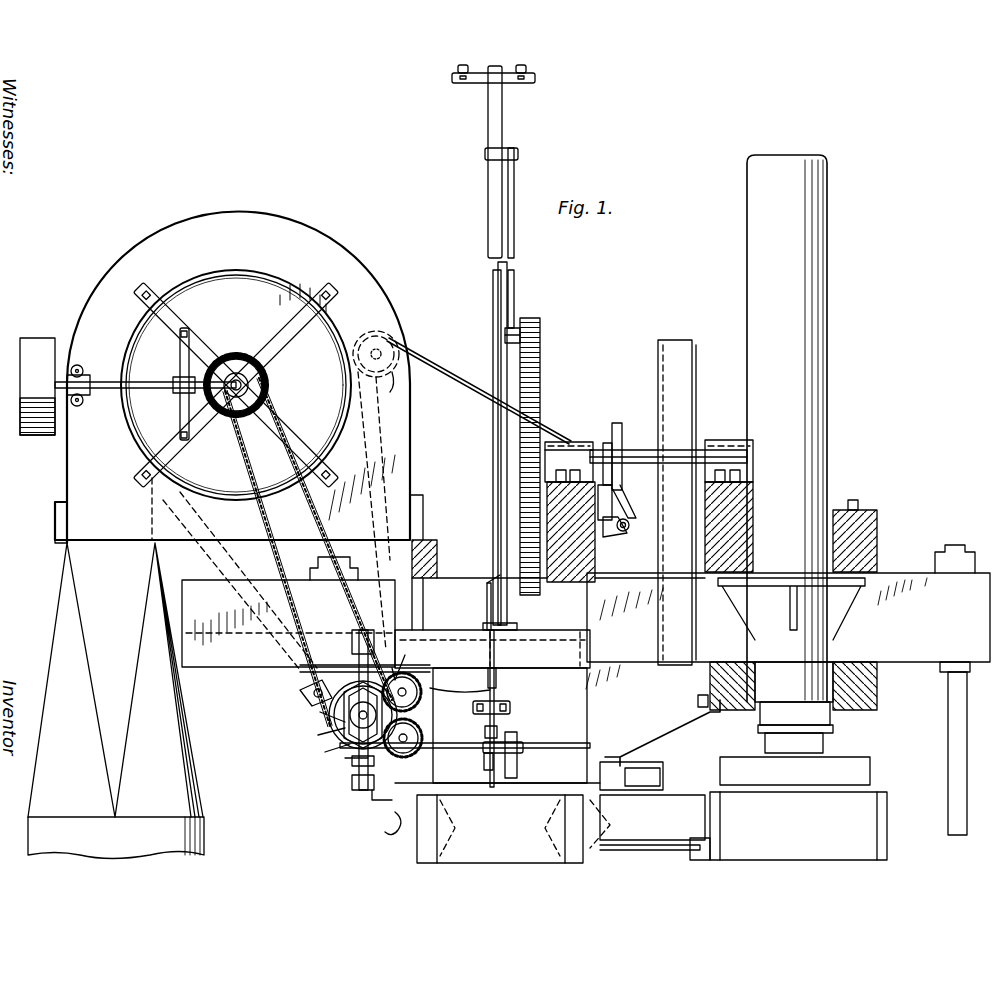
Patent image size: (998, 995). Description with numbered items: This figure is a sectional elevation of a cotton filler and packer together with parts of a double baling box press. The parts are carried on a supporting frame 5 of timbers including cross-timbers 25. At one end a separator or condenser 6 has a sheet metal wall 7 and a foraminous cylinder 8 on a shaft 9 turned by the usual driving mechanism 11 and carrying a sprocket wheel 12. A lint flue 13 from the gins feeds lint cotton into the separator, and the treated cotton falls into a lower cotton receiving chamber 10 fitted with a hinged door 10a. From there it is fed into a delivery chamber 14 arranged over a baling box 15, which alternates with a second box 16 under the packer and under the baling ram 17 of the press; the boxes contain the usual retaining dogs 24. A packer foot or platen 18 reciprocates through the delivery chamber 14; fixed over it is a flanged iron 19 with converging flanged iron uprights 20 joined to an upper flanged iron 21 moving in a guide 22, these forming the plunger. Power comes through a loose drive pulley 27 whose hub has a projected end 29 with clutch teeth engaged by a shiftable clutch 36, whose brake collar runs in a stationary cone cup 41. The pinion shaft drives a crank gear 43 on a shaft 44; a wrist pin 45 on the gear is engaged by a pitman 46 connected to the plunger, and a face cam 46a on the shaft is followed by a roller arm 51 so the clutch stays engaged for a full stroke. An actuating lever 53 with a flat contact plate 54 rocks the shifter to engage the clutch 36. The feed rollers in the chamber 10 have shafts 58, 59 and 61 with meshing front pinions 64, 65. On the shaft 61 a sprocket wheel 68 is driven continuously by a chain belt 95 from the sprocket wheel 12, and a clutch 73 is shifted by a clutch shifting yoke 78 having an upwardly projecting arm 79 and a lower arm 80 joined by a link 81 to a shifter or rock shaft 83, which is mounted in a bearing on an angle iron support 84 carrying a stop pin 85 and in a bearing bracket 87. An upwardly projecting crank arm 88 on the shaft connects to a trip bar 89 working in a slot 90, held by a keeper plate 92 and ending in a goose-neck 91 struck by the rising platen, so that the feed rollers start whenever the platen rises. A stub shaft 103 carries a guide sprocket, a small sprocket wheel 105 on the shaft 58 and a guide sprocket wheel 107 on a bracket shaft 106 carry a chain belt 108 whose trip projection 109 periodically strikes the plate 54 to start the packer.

The supporting frame 5 is at (788, 495).
The separator or condenser 6 is at (100, 299).
The sheet metal wall 7 is at (412, 448).
The foraminous cylinder 8 is at (122, 430).
The shaft 9 is at (240, 376).
The lower cotton receiving chamber 10 is at (473, 706).
The hinged door 10a is at (255, 625).
The driving mechanism 11 is at (145, 392).
The sprocket wheel 12 is at (270, 385).
The lint flue 13 is at (54, 660).
The delivery chamber 14 is at (551, 691).
The baling box 15 is at (500, 829).
The second box 16 is at (798, 826).
The column base 17 is at (790, 712).
The packer foot or platen 18 is at (560, 634).
The flanged iron 19 is at (484, 610).
The flanged iron uprights 20 is at (508, 606).
The flanged iron 21 is at (503, 120).
The guide 22 is at (475, 86).
The retaining dogs 24 is at (612, 826).
The cross-timbers 25 is at (598, 565).
The loose drive pulley 27 is at (697, 372).
The projected end of hub 29 is at (671, 461).
The clutch 36 is at (626, 496).
The stationary cone cup 41 is at (605, 440).
The crank gear 43 is at (543, 412).
The shaft 44 is at (568, 442).
The wrist pin 45 is at (545, 340).
The pitman 46 is at (515, 292).
The face cam 46a is at (636, 454).
The roller arm 51 is at (630, 524).
The actuating lever 53 is at (641, 501).
The flat contact plate 54 is at (540, 535).
The shaft 58 is at (413, 673).
The shaft 59 is at (388, 765).
The shaft 61 is at (342, 750).
The front pinion 64 is at (490, 688).
The front pinion 65 is at (425, 742).
The sprocket wheel 68 is at (300, 690).
The clutch 73 is at (340, 720).
The clutch shifting yoke 78 is at (340, 728).
The upwardly projecting arm 79 is at (365, 710).
The lower arm 80 is at (355, 772).
The link 81 is at (352, 790).
The shifter or rock shaft 83 is at (472, 748).
The angle iron support 84 is at (345, 758).
The stop pin 85 is at (346, 748).
The bearing bracket 87 is at (524, 750).
The upwardly projecting crank arm 88 is at (481, 769).
The trip bar 89 is at (497, 690).
The slot 90 is at (498, 676).
The goose-neck 91 is at (486, 592).
The keeper plate 92 is at (515, 745).
The chain belt 95 is at (288, 612).
The stub shaft 103 is at (530, 497).
The small sprocket wheel 105 is at (418, 640).
The stub or bracket shaft 106 is at (382, 350).
The guide sprocket wheel 107 is at (385, 511).
The chain belt 108 is at (490, 416).
The trip projection 109 is at (540, 504).